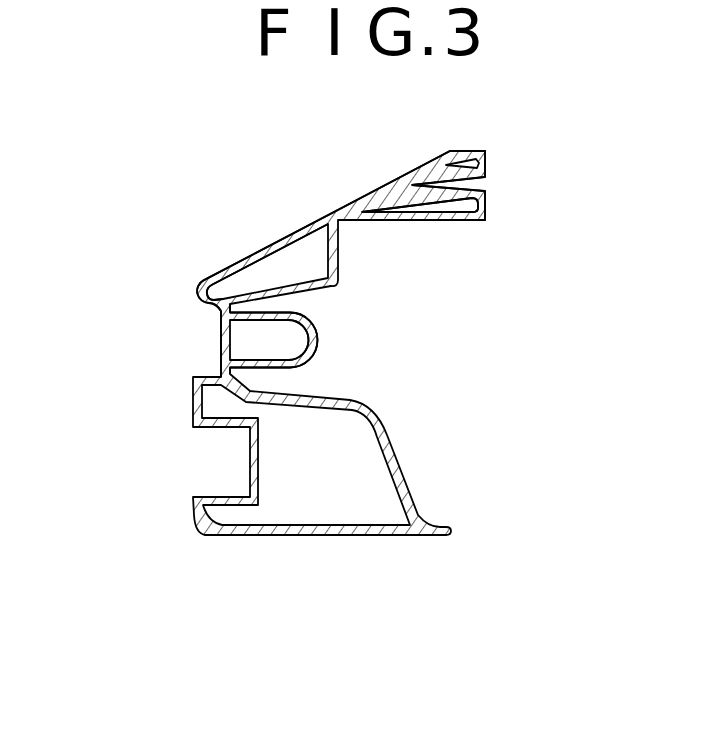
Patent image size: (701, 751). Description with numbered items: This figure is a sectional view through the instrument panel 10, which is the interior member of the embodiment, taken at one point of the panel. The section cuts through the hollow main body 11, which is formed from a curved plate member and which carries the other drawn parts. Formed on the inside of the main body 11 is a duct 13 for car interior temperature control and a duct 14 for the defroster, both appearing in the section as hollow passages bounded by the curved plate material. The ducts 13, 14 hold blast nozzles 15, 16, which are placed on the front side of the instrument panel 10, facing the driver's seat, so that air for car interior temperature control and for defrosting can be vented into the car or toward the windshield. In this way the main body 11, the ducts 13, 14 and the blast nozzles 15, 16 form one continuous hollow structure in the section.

The instrument panel 10 is at (167, 280).
The hollow main body 11 is at (258, 252).
The duct for car interior temperature control 13 is at (300, 338).
The duct for defroster 14 is at (450, 205).
The blast nozzle 15 is at (224, 348).
The blast nozzle 16 is at (377, 196).